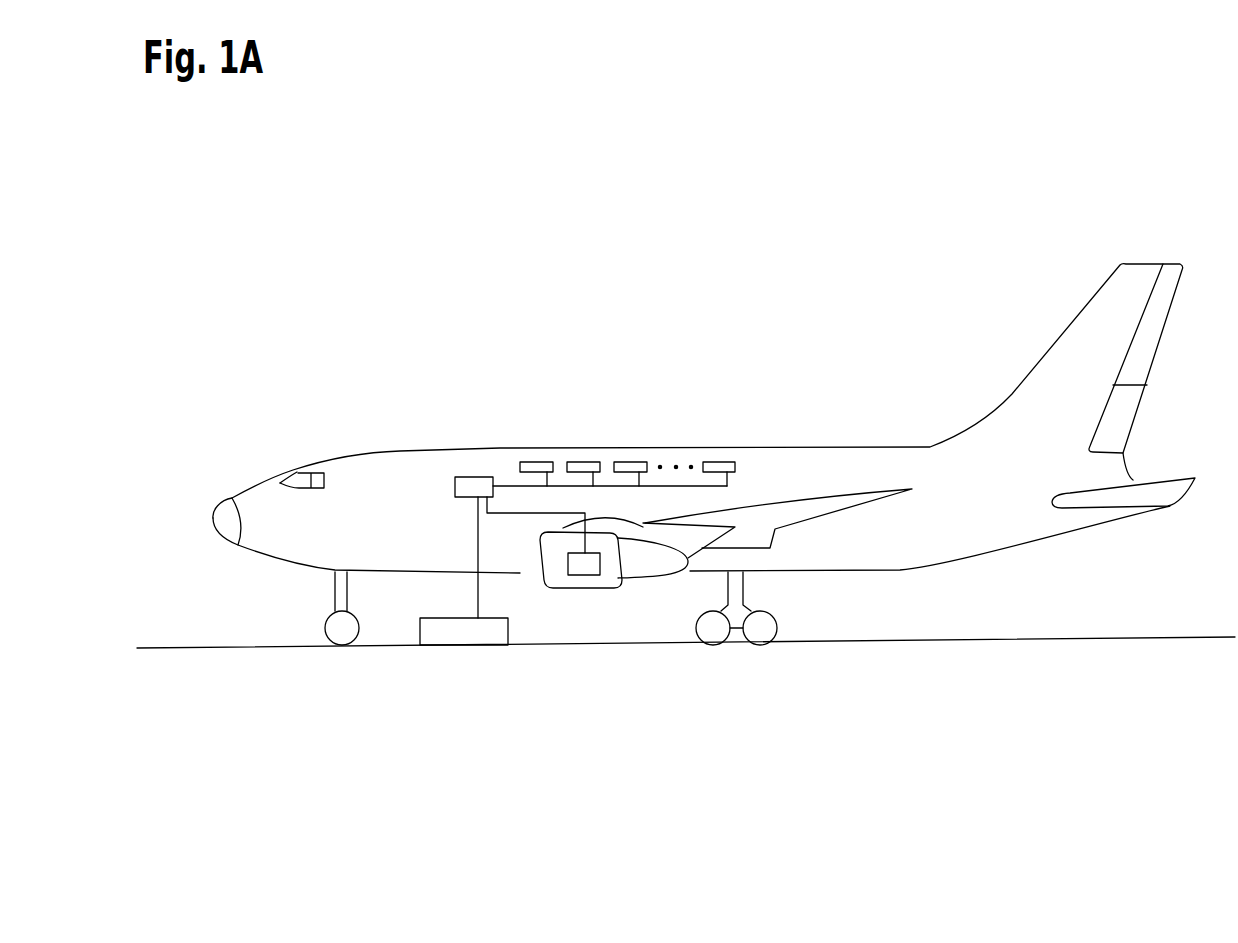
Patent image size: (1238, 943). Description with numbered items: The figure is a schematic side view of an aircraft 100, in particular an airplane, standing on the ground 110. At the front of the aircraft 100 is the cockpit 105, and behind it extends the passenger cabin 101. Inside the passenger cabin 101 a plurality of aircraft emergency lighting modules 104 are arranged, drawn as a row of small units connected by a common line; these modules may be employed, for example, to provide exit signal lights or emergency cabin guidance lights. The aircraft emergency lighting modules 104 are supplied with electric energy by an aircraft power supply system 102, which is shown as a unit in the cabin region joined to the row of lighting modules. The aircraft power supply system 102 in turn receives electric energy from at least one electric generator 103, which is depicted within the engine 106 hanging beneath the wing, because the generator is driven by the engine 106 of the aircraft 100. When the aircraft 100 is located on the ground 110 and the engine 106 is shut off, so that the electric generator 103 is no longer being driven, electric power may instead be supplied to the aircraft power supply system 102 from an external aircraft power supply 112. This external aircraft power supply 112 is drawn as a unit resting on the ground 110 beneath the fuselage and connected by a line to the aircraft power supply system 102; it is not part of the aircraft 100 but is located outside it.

The aircraft 100 is at (928, 313).
The passenger cabin 101 is at (762, 422).
The aircraft power supply system 102 is at (475, 477).
The electric generator 103 is at (583, 575).
The aircraft emergency lighting modules 104 is at (528, 462).
The cockpit 105 is at (286, 460).
The engine 106 is at (622, 607).
The ground 110 is at (1063, 640).
The external aircraft power supply 112 is at (420, 633).